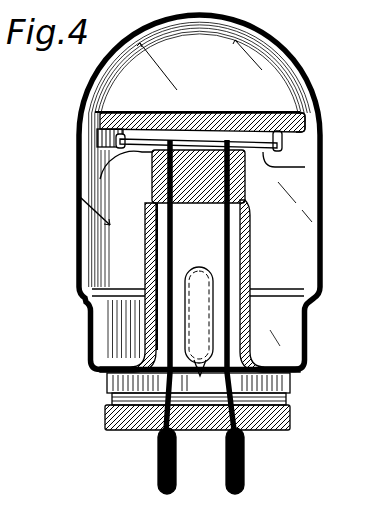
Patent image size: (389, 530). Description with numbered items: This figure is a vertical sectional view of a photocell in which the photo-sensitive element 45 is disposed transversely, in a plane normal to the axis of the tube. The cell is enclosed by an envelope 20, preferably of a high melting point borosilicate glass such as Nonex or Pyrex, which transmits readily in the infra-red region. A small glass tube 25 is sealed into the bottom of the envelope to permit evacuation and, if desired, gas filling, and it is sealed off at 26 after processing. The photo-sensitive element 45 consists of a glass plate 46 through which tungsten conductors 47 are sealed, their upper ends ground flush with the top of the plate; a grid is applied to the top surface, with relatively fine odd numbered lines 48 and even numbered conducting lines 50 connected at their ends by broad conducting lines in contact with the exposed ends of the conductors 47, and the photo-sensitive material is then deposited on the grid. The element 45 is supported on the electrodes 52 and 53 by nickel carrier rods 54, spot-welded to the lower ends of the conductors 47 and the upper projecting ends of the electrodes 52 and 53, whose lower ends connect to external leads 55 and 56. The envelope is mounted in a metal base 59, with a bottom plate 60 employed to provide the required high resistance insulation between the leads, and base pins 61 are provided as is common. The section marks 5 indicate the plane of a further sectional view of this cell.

The section line 5- 5 is at (70, 108).
The envelope 20 is at (320, 205).
The glass tube 25 is at (205, 296).
The seal-off point 26 is at (208, 384).
The photo-sensitive element 45 is at (231, 113).
The glass plate 46 is at (218, 99).
The tungsten conductors 47 is at (283, 147).
The odd numbered lines 48 is at (286, 113).
The even numbered conducting lines 50 is at (160, 90).
The electrode 52 is at (167, 243).
The electrode 53 is at (232, 242).
The nickel carrier rods 54 is at (305, 167).
The external lead 55 is at (167, 315).
The external lead 56 is at (229, 322).
The metal base 59 is at (308, 353).
The bottom plate 60 is at (271, 423).
The base pins 61 is at (226, 468).